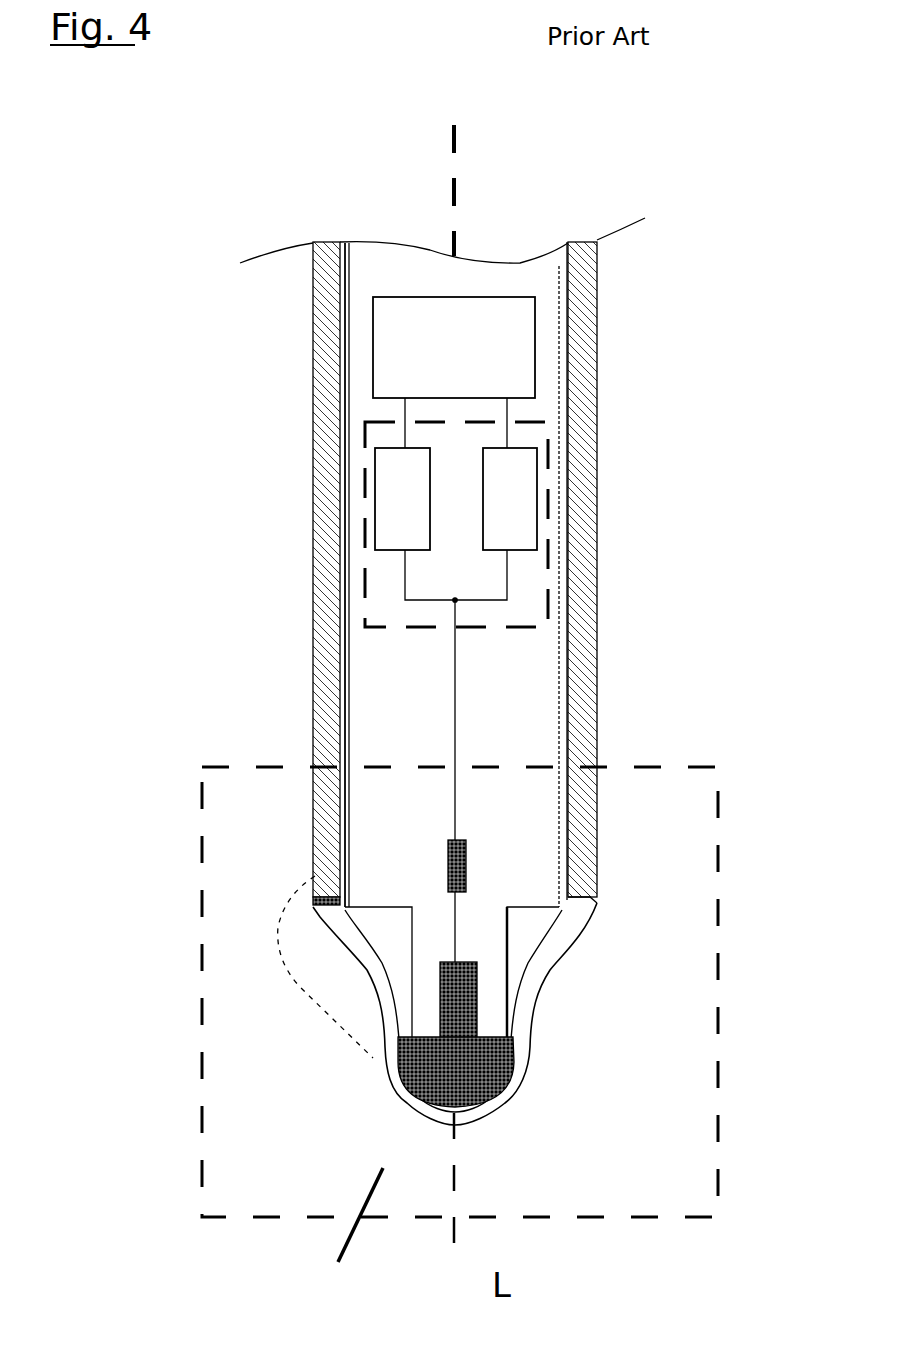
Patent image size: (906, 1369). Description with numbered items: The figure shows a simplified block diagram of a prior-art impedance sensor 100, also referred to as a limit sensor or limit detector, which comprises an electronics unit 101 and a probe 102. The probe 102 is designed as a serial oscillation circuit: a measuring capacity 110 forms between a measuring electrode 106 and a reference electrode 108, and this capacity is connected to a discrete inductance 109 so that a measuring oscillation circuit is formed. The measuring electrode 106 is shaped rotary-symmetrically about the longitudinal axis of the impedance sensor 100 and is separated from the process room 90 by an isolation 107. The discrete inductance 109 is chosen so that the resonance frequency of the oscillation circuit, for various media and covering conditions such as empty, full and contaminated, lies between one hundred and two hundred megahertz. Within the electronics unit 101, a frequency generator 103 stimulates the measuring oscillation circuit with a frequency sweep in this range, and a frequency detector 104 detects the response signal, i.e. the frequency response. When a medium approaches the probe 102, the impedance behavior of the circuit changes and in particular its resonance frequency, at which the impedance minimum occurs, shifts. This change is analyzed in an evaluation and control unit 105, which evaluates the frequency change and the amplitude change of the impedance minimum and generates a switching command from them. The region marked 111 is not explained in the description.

The impedance sensor 100 is at (185, 195).
The process room 90 is at (772, 1081).
The electronics unit 101 is at (548, 573).
The probe 102 is at (382, 1085).
The frequency generator 103 is at (510, 499).
The frequency detector 104 is at (402, 499).
The evaluation and control unit 105 is at (454, 347).
The measuring electrode 106 is at (493, 1083).
The isolation 107 is at (555, 952).
The reference electrode 108 is at (597, 865).
The discrete inductance 109 is at (467, 866).
The measuring capacity 110 is at (322, 992).
The end face of tip 111 is at (346, 1238).